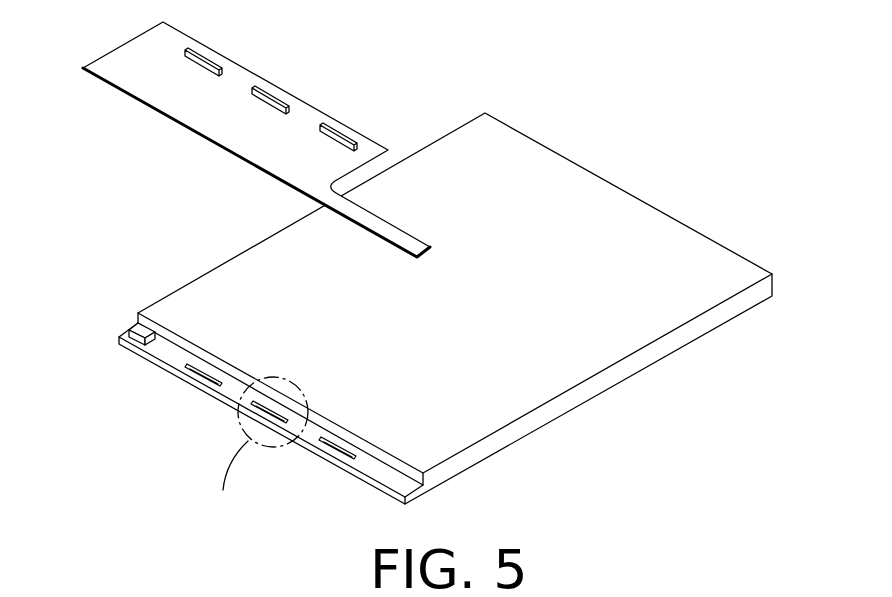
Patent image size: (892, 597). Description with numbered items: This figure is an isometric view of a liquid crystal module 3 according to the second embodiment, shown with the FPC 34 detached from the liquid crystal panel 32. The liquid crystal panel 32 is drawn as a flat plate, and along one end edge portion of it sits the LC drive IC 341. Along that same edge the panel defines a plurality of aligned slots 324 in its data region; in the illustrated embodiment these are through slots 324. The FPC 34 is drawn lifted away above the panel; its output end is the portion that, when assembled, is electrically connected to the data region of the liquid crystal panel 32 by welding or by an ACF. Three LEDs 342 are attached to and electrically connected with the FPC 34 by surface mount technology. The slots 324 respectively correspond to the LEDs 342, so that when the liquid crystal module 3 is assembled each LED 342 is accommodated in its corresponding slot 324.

The liquid crystal module 3 is at (406, 61).
The liquid crystal panel 32 is at (633, 221).
The slots 324 is at (207, 374).
The LC drive IC 341 is at (135, 326).
The FPC 34 is at (233, 78).
The LEDs 342 is at (203, 56).